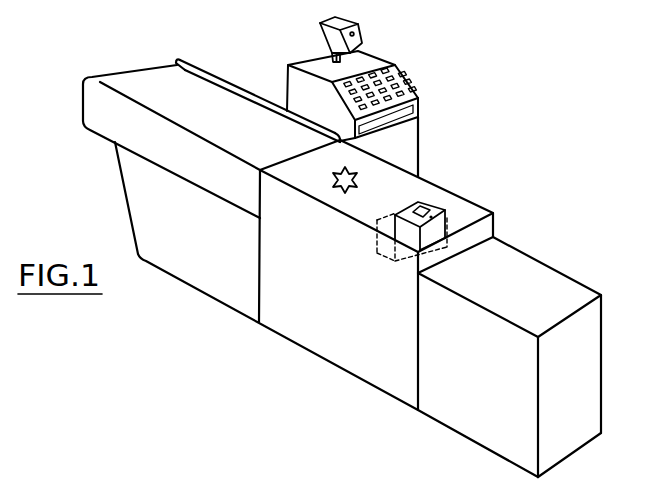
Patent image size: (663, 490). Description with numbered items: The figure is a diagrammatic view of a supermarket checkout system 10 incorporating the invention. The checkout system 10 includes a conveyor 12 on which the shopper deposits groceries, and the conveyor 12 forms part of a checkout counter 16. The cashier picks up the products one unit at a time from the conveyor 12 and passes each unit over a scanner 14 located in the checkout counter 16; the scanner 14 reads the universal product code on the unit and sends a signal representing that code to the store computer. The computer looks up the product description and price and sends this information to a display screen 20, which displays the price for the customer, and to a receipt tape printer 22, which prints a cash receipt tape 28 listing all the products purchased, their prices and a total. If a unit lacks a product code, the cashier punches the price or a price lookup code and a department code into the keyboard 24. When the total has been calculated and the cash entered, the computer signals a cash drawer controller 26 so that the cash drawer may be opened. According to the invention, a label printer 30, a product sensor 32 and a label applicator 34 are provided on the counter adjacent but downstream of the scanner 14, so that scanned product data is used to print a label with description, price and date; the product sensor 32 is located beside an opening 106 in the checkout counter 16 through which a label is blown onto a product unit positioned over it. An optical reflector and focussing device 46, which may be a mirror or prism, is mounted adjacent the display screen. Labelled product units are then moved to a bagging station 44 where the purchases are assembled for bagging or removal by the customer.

The supermarket checkout system 10 is at (514, 95).
The conveyor 12 is at (143, 80).
The scanner 14 is at (337, 177).
The checkout counter 16 is at (396, 178).
The display screen 20 is at (345, 40).
The receipt tape printer 22 is at (398, 77).
The keyboard 24 is at (382, 73).
The cash drawer controller 26 is at (410, 118).
The cash receipt tape 28 is at (402, 88).
The label printer 30 is at (378, 253).
The product sensor 32 is at (442, 214).
The label applicator 34 is at (456, 255).
The bagging station 44 is at (550, 270).
The optical reflector and focussing device 46 is at (360, 23).
The opening 106 is at (427, 206).